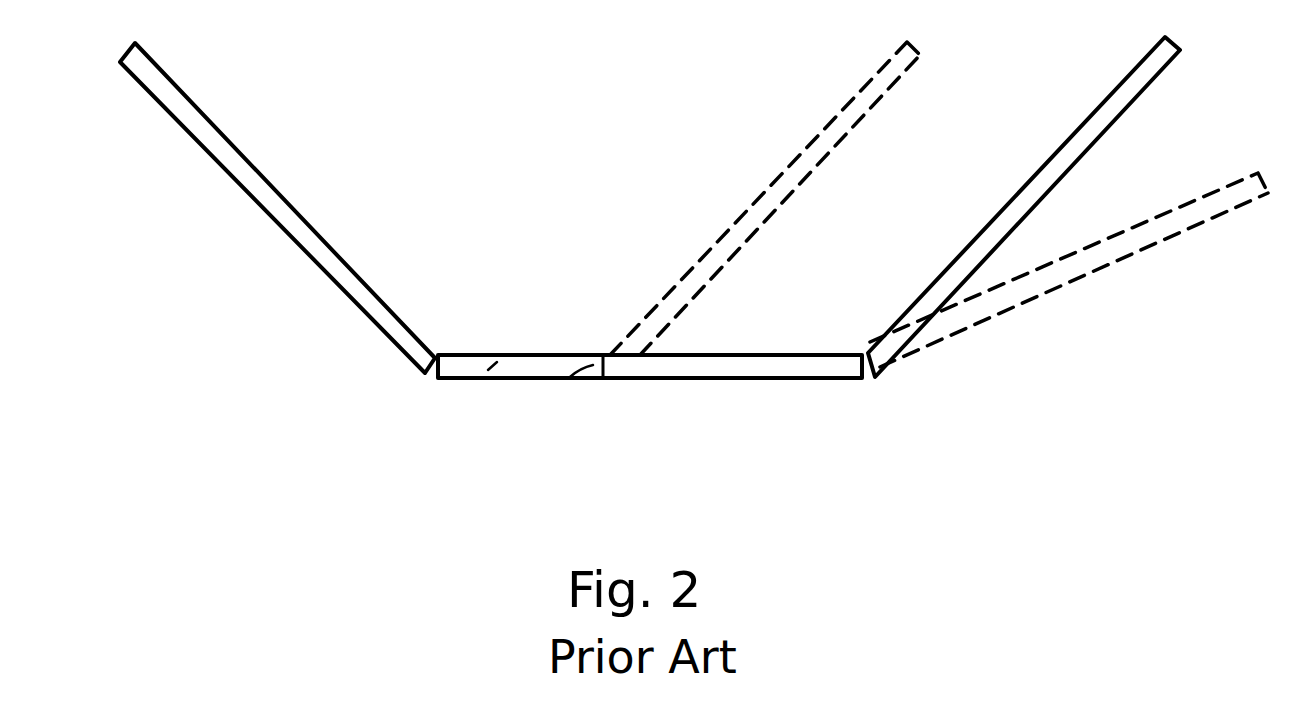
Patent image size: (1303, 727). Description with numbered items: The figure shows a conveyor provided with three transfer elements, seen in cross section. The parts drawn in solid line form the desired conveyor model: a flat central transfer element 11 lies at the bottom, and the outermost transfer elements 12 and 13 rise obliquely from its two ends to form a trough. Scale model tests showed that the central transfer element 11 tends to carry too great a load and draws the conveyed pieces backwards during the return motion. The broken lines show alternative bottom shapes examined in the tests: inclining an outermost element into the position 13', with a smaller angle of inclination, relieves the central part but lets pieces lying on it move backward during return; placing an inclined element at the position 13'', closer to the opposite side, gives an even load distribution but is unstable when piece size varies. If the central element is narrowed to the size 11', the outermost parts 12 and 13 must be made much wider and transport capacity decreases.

The central transfer element 11 is at (650, 418).
The narrower central transfer element size 11' is at (562, 441).
The outermost transfer element 12 is at (272, 180).
The outermost transfer element 13 is at (1024, 207).
The inclined position with smaller angle of inclination 13' is at (1069, 270).
The inclined transfer element position closer to opposite side 13'' is at (765, 198).